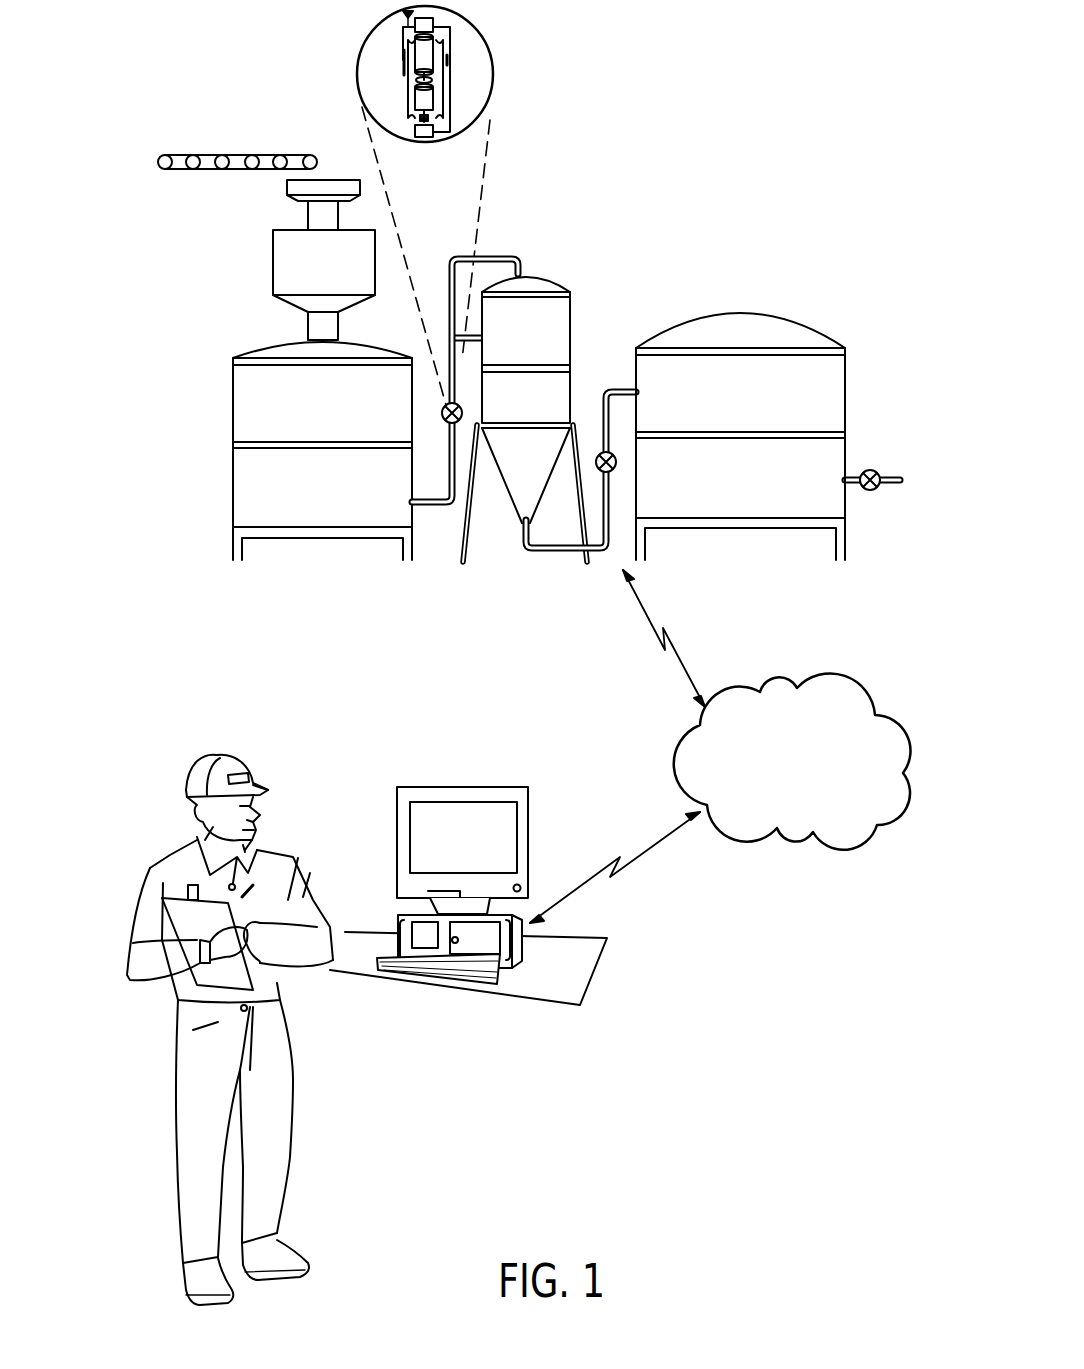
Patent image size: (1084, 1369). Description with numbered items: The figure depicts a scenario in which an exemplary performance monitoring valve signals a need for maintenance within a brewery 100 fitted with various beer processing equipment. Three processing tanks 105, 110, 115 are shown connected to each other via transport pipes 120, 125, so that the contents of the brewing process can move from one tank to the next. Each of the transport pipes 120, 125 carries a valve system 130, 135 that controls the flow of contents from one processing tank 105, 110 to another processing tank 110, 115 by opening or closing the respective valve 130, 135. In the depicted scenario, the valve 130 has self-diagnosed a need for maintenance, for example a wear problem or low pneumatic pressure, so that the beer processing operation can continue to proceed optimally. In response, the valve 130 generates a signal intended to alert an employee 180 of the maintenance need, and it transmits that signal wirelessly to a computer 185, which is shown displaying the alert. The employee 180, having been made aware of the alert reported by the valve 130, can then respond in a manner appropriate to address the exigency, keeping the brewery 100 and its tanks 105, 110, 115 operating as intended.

The brewery 100 is at (703, 168).
The processing tank 105 is at (252, 347).
The processing tank 110 is at (566, 278).
The processing tank 115 is at (740, 312).
The transport pipe 120 is at (460, 252).
The transport pipe 125 is at (622, 384).
The valve 130 is at (442, 413).
The valve 135 is at (617, 462).
The employee 180 is at (172, 745).
The computer 185 is at (522, 938).